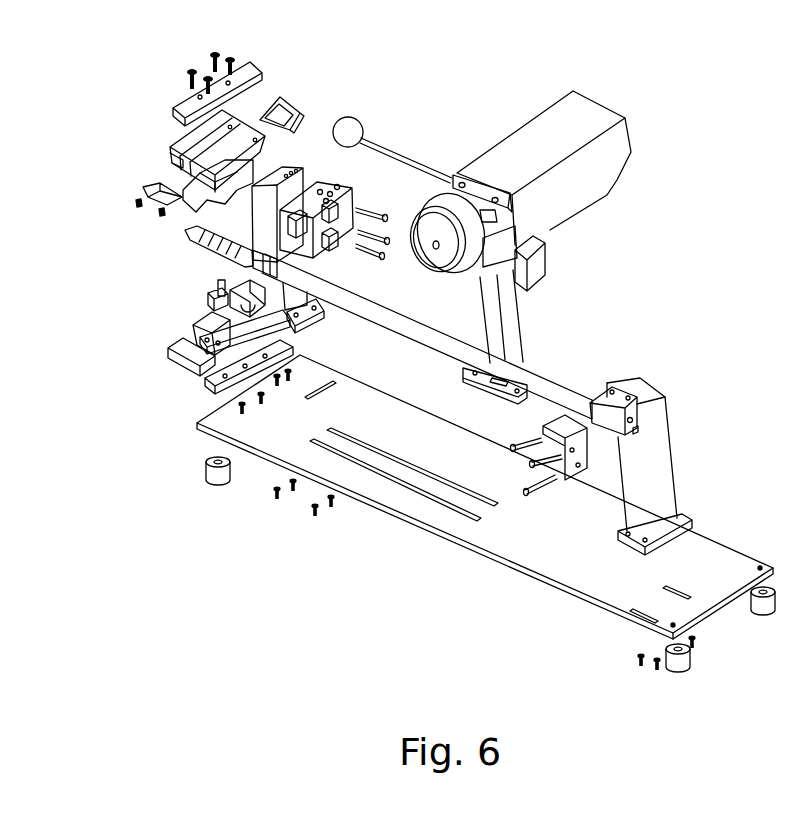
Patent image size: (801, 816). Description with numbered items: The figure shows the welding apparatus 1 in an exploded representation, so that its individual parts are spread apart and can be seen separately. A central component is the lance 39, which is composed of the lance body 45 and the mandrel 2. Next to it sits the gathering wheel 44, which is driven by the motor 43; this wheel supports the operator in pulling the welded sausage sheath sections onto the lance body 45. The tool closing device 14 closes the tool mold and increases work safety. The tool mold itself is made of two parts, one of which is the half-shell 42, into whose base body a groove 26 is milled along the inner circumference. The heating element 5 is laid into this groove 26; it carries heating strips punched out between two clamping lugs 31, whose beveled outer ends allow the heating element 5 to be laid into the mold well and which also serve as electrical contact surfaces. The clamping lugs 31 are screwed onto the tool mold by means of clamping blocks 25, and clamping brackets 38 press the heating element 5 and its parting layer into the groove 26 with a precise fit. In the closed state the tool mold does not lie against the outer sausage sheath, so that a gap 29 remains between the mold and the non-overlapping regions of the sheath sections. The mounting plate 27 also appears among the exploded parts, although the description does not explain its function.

The apparatus 1 is at (460, 604).
The mandrel 2 is at (225, 247).
The heating element 5 is at (203, 317).
The tool closing device 14 is at (352, 196).
The clamping block 25 is at (285, 100).
The groove 26 is at (290, 340).
The top clamp plate with screws 27 is at (240, 127).
The gap 29 is at (205, 352).
The clamping lug 31 is at (235, 188).
The clamping bracket 38 is at (214, 285).
The lance 39 is at (573, 397).
The half-shell 42 is at (172, 152).
The motor 43 is at (567, 190).
The gathering wheel 44 is at (458, 215).
The lance body 45 is at (368, 305).